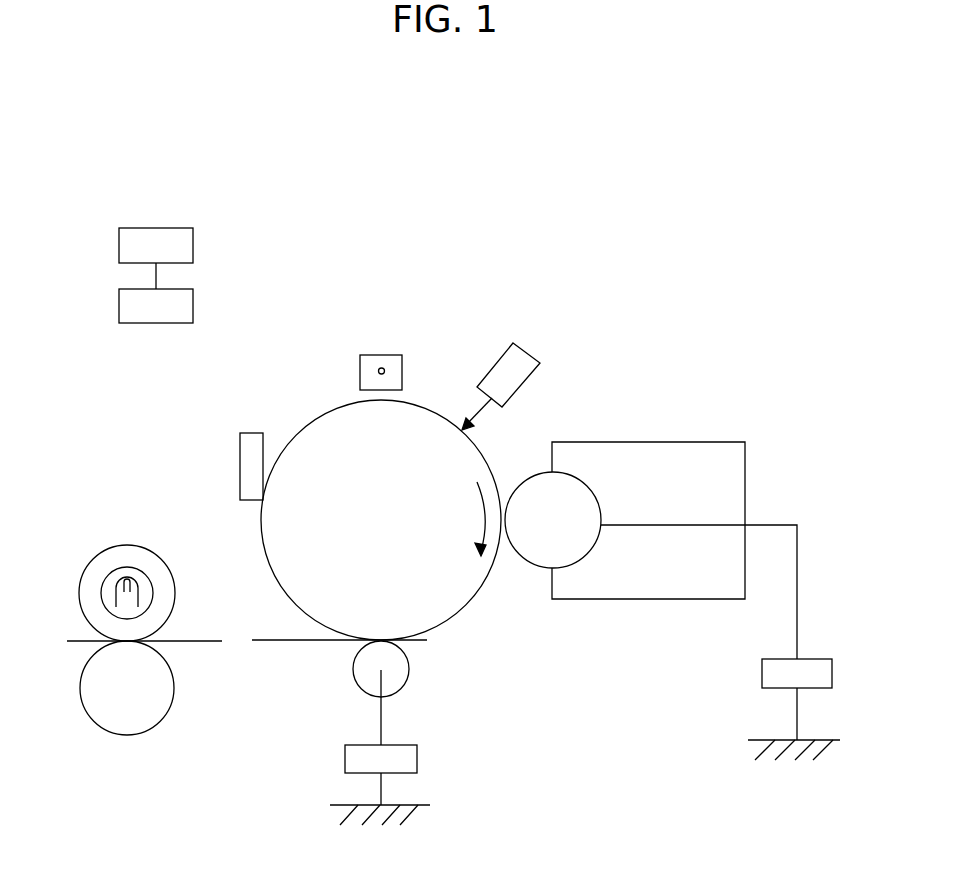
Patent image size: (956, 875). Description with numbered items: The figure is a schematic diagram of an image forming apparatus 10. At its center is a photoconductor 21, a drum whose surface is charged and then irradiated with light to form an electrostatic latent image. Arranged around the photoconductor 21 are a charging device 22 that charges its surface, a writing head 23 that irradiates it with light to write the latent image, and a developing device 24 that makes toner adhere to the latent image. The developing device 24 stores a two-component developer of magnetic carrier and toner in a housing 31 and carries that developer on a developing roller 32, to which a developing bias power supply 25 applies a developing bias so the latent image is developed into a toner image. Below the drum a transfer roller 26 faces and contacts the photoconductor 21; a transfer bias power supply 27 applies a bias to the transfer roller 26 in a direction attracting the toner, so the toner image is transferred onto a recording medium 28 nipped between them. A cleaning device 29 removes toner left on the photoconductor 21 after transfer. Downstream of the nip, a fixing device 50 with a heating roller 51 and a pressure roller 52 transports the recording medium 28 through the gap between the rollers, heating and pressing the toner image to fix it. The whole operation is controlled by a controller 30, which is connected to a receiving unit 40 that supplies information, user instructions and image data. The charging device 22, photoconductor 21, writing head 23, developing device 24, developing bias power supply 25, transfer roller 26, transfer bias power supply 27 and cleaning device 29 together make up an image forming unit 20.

The image forming apparatus 10 is at (345, 256).
The image forming unit 20 is at (538, 677).
The photoconductor 21 is at (318, 418).
The charging device 22 is at (382, 355).
The writing head 23 is at (527, 350).
The developing device 24 is at (697, 436).
The developing bias power supply 25 is at (760, 675).
The transfer roller 26 is at (410, 672).
The transfer bias power supply 27 is at (417, 758).
The recording medium 28 is at (303, 643).
The cleaning device 29 is at (240, 464).
The controller 30 is at (119, 300).
The housing 31 is at (620, 441).
The developing roller 32 is at (528, 569).
The receiving unit 40 is at (119, 240).
The fixing device 50 is at (85, 558).
The heating roller 51 is at (175, 592).
The pressure roller 52 is at (172, 700).